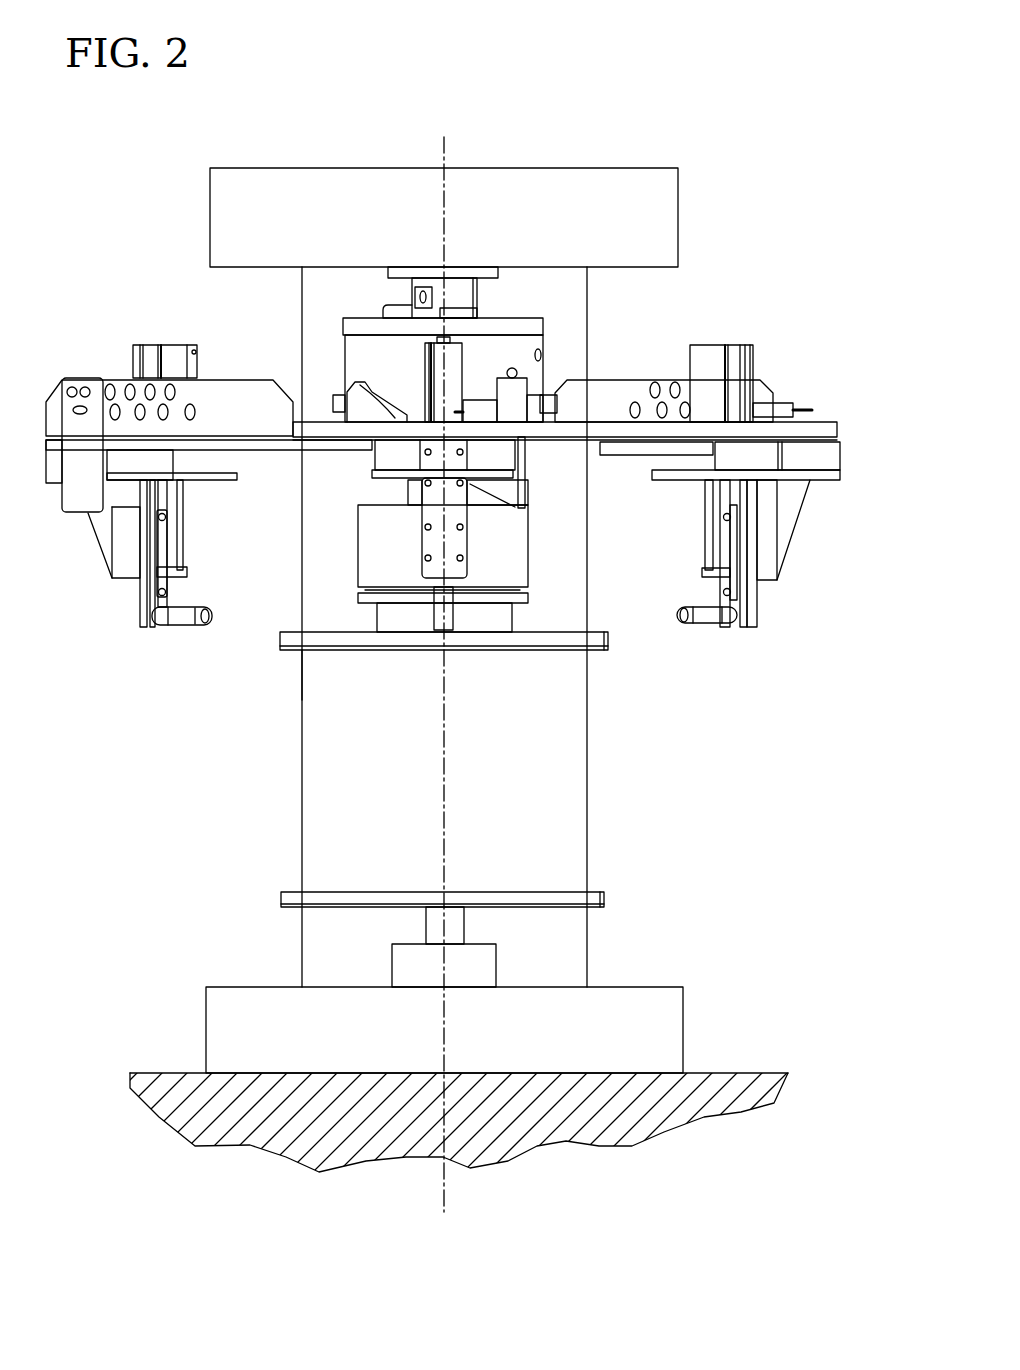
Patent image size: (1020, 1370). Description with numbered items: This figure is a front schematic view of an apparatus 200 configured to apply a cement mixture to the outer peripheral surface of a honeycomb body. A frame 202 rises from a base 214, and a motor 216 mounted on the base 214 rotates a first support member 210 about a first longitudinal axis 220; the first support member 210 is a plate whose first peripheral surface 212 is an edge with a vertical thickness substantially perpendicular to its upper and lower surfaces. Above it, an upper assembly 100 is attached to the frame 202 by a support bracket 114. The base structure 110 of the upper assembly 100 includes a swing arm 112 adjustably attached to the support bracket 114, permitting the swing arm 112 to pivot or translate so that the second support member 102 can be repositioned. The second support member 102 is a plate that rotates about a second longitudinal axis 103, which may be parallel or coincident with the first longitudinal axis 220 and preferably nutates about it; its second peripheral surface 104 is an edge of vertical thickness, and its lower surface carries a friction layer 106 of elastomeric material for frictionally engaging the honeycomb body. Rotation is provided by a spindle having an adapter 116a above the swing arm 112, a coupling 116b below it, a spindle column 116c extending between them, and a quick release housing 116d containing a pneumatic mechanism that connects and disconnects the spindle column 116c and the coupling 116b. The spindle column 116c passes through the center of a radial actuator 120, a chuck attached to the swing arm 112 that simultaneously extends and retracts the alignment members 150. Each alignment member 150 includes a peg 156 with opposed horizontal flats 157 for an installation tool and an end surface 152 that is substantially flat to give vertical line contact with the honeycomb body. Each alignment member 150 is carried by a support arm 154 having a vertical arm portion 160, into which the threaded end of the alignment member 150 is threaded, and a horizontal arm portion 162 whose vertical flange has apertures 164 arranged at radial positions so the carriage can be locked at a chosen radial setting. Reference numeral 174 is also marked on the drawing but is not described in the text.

The upper assembly 100 is at (745, 299).
The second support member 102 is at (562, 632).
The second longitudinal axis 103 is at (443, 153).
The second peripheral surface 104 is at (616, 642).
The friction layer 106 is at (320, 662).
The base structure 110 is at (542, 298).
The swing arm 112 is at (542, 324).
The support bracket 114 is at (393, 313).
The adapter 116a is at (462, 275).
The coupling 116b is at (392, 620).
The spindle column 116c is at (473, 318).
The quick release housing 116d is at (515, 528).
The radial actuator 120 is at (370, 348).
The alignment member 150 is at (155, 655).
The surface 152 is at (211, 618).
The support arm 154 is at (103, 345).
The peg 156 is at (192, 608).
The horizontal flats 157 is at (702, 624).
The vertical arm portion 160 is at (137, 607).
The horizontal arm portion 162 is at (252, 393).
The apertures 164 is at (192, 402).
The actuator cylinder 174 is at (172, 347).
The apparatus 200 is at (698, 132).
The frame 202 is at (587, 345).
The first support member 210 is at (548, 892).
The first peripheral surface 212 is at (612, 903).
The base 214 is at (665, 1037).
The motor 216 is at (478, 968).
The first longitudinal axis 220 is at (446, 1180).